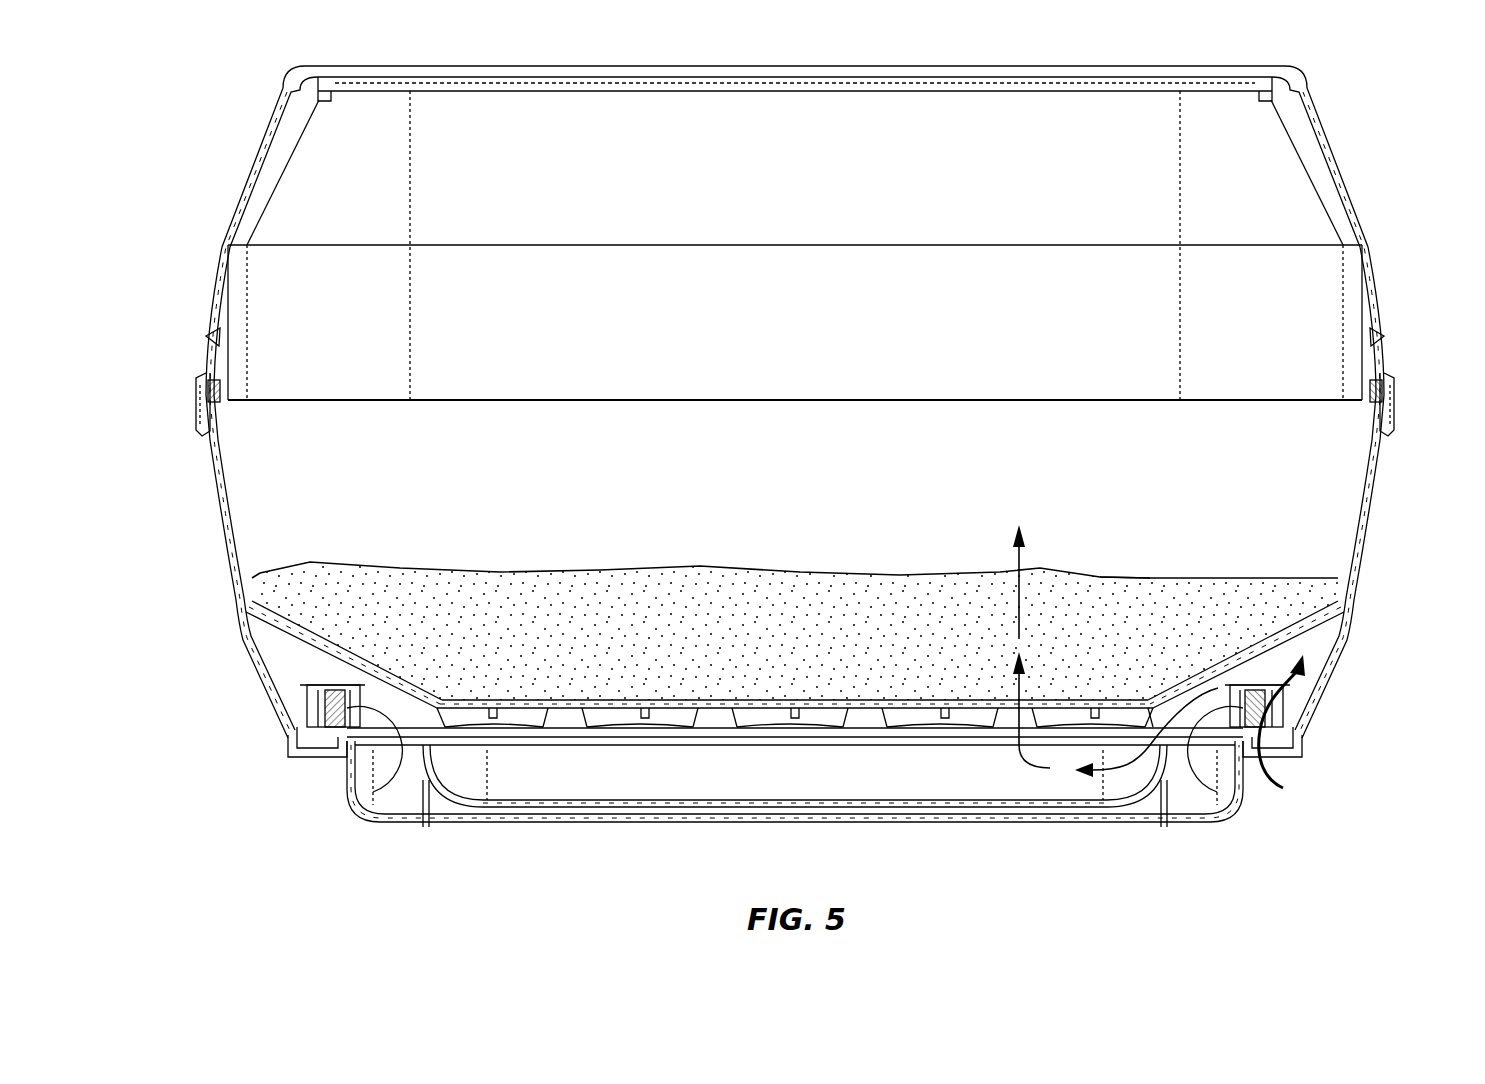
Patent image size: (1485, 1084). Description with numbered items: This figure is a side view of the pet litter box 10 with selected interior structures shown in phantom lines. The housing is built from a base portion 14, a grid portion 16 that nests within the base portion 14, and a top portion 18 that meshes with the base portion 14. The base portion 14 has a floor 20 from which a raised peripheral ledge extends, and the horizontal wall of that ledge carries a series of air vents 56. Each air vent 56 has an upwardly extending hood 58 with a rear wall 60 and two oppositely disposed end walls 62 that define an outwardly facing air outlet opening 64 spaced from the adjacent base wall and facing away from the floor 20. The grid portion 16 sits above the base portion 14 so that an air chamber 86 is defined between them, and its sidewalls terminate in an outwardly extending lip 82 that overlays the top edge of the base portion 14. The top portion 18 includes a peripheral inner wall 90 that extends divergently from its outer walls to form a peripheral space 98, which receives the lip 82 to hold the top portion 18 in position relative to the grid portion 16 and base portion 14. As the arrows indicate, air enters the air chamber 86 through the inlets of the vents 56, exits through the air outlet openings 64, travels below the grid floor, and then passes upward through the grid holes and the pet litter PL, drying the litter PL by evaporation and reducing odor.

The pet litter box 10 is at (200, 94).
The top portion 18 is at (1366, 197).
The peripheral inner wall 90 is at (1362, 340).
The peripheral space 98 is at (1380, 333).
The lip 82 is at (1380, 360).
The base portion 14 is at (234, 643).
The grid portion 16 is at (284, 655).
The pet litter PL is at (1120, 572).
The hood 58 is at (305, 694).
The air outlet opening 64 is at (298, 724).
The end walls 62 is at (318, 720).
The rear wall 60 is at (388, 742).
The air vents 56 is at (585, 716).
The floor 20 is at (655, 793).
The air chamber 86 is at (960, 788).